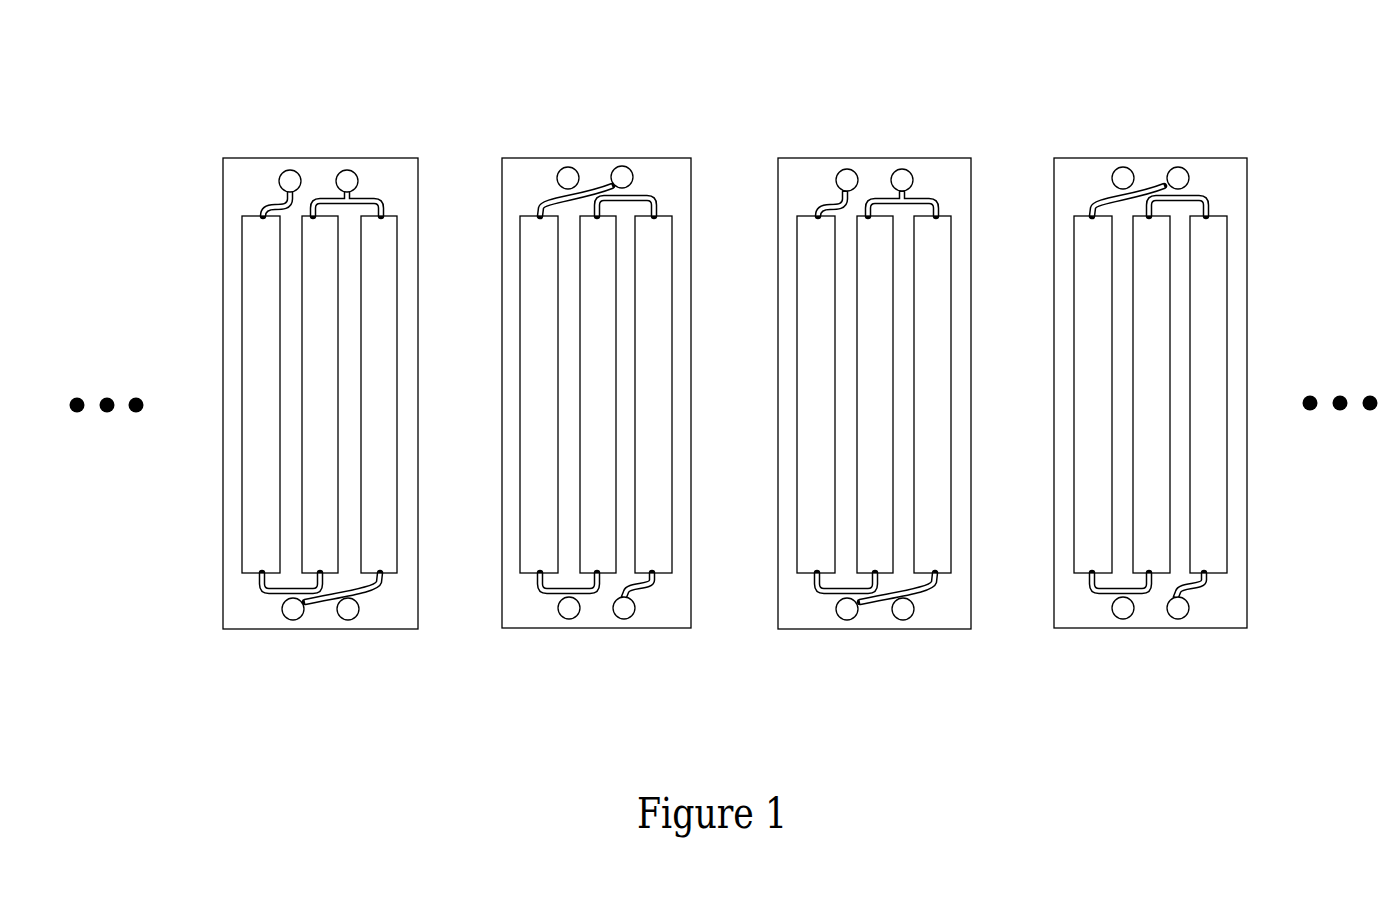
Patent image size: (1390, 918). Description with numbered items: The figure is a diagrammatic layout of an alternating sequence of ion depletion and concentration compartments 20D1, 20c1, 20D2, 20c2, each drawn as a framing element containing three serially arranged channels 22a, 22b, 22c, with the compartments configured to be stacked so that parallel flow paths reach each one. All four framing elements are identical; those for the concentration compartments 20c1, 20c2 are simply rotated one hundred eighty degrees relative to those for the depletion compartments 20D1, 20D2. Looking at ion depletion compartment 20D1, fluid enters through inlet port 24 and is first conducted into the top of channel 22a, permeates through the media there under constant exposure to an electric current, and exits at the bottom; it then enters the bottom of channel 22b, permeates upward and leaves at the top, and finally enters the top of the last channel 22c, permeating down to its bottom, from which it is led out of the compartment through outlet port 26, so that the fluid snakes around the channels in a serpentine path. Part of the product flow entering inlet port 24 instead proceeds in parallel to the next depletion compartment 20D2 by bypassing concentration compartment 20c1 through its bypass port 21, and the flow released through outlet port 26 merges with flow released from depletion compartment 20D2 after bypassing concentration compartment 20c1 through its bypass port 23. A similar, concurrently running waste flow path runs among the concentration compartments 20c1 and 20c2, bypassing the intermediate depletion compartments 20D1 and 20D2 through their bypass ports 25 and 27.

The ion depletion compartment 20D1 is at (317, 130).
The ion concentration compartment 20c1 is at (586, 132).
The ion depletion compartment 20D2 is at (854, 130).
The ion concentration compartment 20c2 is at (1123, 130).
The bypass port 21 is at (568, 167).
The channel 22a is at (250, 298).
The channel 22b is at (318, 436).
The channel 22c is at (382, 358).
The bypass port 23 is at (570, 620).
The inlet port 24 is at (290, 170).
The bypass port 25 is at (347, 170).
The outlet port 26 is at (293, 620).
The bypass port 27 is at (348, 620).